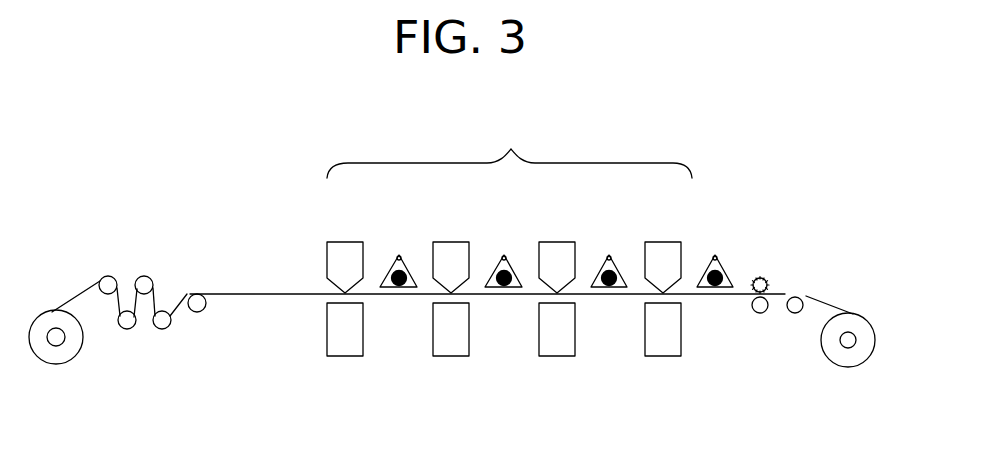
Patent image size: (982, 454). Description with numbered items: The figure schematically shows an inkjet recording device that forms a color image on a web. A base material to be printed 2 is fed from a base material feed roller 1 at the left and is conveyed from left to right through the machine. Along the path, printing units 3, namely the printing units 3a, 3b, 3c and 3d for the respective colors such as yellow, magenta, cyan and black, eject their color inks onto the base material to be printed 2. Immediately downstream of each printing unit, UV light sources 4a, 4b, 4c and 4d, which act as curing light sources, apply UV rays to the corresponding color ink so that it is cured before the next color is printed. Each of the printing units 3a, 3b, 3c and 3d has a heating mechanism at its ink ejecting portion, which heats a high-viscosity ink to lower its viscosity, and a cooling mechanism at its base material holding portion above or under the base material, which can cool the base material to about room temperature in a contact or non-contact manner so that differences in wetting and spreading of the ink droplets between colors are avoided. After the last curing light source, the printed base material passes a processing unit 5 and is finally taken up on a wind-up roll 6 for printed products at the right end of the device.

The base material feed roller 1 is at (62, 342).
The base material to be printed 2 is at (240, 294).
The printing units 3 is at (511, 150).
The printing unit 3a is at (342, 252).
The printing unit 3b is at (448, 252).
The printing unit 3c is at (554, 252).
The printing unit 3d is at (660, 252).
The UV light source 4a is at (400, 255).
The UV light source 4b is at (505, 255).
The UV light source 4c is at (610, 255).
The UV light source 4d is at (716, 256).
The processing unit 5 is at (770, 278).
The wind-up roll 6 is at (847, 342).